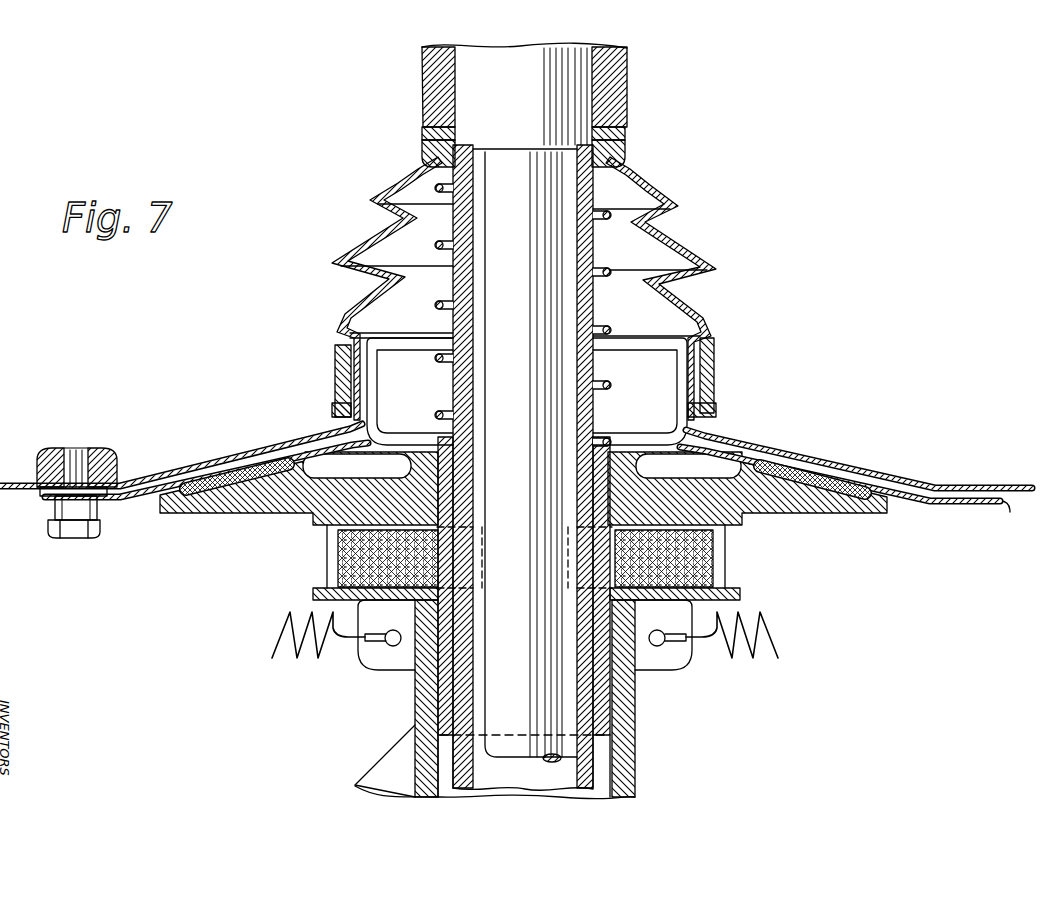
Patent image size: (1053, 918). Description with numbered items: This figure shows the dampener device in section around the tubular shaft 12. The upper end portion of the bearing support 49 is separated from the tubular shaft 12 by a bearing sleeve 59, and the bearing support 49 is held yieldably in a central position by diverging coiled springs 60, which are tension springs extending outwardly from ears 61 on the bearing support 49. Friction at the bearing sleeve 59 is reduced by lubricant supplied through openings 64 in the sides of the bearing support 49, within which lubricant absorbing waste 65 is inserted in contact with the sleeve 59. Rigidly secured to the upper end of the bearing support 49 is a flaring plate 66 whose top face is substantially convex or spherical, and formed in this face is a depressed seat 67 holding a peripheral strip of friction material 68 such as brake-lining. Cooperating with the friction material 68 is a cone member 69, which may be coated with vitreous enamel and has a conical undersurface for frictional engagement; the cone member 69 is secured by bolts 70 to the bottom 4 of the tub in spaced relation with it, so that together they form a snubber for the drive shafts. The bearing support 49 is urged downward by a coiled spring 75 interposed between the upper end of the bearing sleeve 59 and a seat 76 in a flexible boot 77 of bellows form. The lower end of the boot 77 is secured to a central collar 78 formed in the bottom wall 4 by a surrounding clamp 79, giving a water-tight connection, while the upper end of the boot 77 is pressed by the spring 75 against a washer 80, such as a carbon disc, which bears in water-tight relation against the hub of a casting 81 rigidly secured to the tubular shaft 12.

The bottom of the tub 4 is at (963, 481).
The tubular shaft 12 is at (580, 787).
The bearing support 49 is at (635, 747).
The bearing sleeve 59 is at (613, 703).
The coiled springs 60 is at (328, 658).
The ears 61 is at (397, 662).
The openings 64 is at (330, 549).
The lubricant absorbing waste 65 is at (727, 573).
The flaring plate 66 is at (887, 515).
The depressed seat 67 is at (843, 495).
The friction material 68 is at (246, 468).
The cone member 69 is at (690, 375).
The bolts 70 is at (80, 543).
The coiled spring 75 is at (610, 263).
The seat 76 is at (628, 151).
The flexible boot 77 is at (683, 298).
The central collar 78 is at (692, 415).
The clamp 79 is at (335, 372).
The washer 80 is at (624, 131).
The casting 81 is at (628, 82).